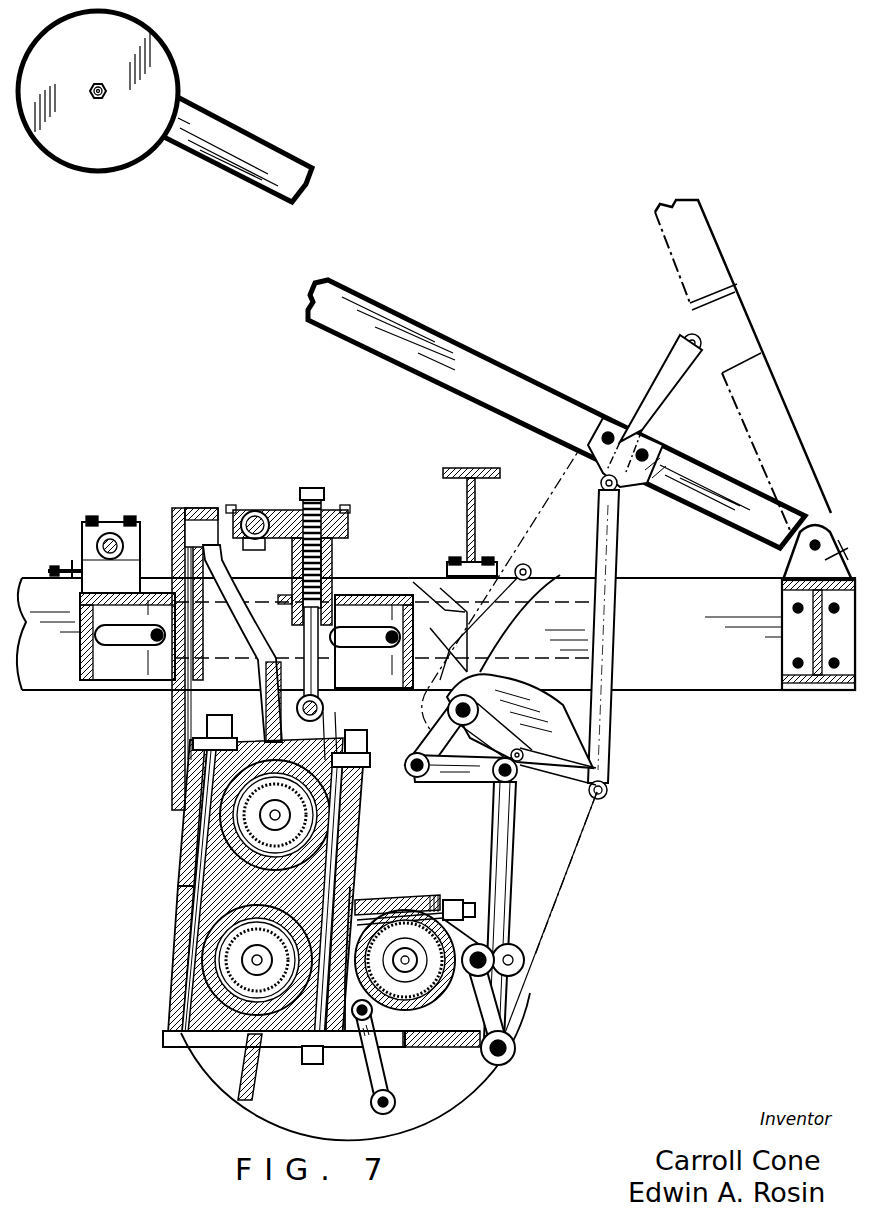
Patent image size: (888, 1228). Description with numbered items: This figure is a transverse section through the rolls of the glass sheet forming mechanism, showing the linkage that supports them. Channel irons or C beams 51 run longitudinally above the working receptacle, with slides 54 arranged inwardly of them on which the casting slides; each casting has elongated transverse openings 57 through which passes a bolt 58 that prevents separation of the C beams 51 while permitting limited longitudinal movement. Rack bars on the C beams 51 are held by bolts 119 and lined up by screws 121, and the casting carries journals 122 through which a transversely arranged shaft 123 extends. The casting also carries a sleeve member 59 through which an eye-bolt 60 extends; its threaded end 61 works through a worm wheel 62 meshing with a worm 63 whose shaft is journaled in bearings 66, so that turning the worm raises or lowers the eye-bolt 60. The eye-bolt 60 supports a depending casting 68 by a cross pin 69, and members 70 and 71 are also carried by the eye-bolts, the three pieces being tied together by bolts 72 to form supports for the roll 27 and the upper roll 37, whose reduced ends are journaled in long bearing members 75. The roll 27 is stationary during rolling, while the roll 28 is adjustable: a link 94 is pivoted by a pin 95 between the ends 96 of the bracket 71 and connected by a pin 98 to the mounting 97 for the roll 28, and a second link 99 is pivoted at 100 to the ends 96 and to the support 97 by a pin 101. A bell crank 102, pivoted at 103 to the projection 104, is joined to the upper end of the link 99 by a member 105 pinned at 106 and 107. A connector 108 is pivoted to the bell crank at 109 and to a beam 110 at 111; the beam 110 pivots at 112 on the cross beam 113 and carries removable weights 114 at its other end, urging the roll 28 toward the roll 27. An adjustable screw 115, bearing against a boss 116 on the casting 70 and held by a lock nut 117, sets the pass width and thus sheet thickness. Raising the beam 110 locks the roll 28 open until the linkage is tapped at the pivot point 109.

The removable weights 114 is at (148, 92).
The beam 110 is at (490, 370).
The pivot 112 is at (830, 522).
The pivot connection 111 is at (625, 487).
The connector 108 is at (614, 630).
The pivot point 109 is at (522, 565).
The C beams 51 is at (730, 680).
The cross beam 113 is at (818, 685).
The transverse openings 57 is at (413, 595).
The bolt 58 is at (123, 645).
The journals 122 is at (140, 545).
The shaft 123 is at (112, 540).
The bolts 119 is at (70, 565).
The screws 121 is at (52, 570).
The worm wheel 62 is at (282, 510).
The bearings 66 is at (242, 518).
The threaded end 61 is at (318, 505).
The sleeve member 59 is at (334, 556).
The worm 63 is at (253, 550).
The eye-bolt 60 is at (306, 632).
The depending casting 68 is at (300, 758).
The cross pin 69 is at (298, 706).
The projection 104 is at (480, 580).
The slides 54 is at (485, 628).
The pivot 103 is at (468, 695).
The bell crank 102 is at (500, 680).
The pin 106 is at (410, 763).
The pin 107 is at (523, 760).
The member 105 is at (512, 782).
The bearing members 75 is at (230, 818).
The upper roll 37 is at (290, 815).
The member 70 is at (190, 858).
The member 71 is at (178, 968).
The bolts 72 is at (340, 850).
The roll 27 is at (220, 1048).
The pin 98 is at (322, 1062).
The link 94 is at (372, 1065).
The pin 95 is at (372, 1106).
The ends 96 is at (448, 1128).
The adjustable screw 115 is at (392, 900).
The lock nut 117 is at (450, 900).
The boss 116 is at (352, 915).
The roll 28 is at (515, 985).
The second link 99 is at (520, 868).
The mounting 97 is at (406, 1000).
The pin 101 is at (516, 957).
The pivot 100 is at (518, 1048).